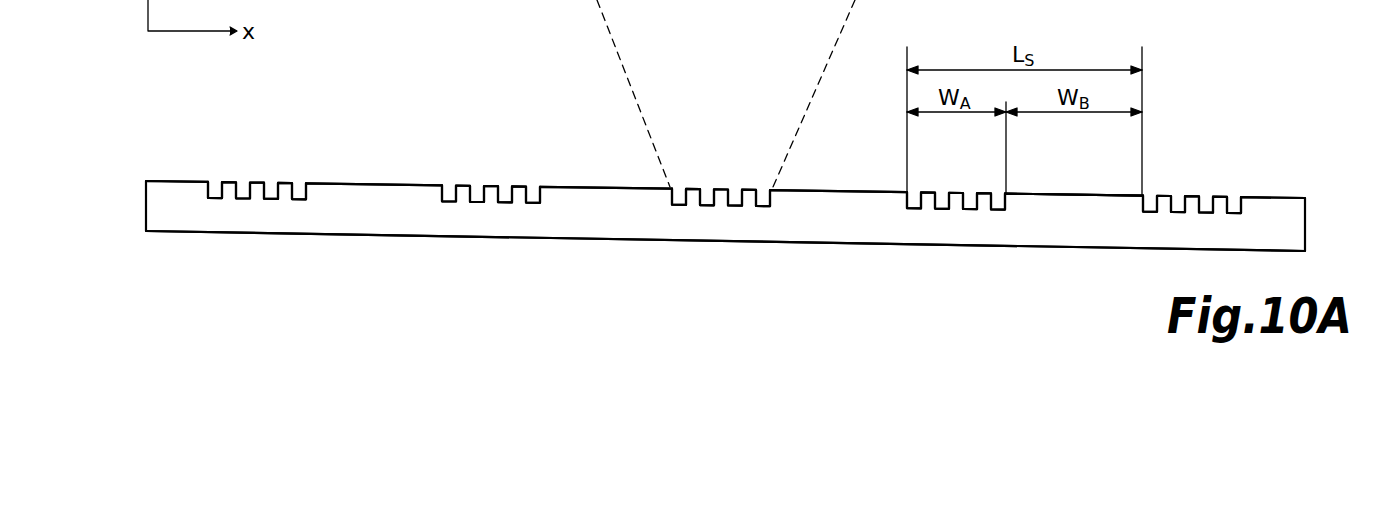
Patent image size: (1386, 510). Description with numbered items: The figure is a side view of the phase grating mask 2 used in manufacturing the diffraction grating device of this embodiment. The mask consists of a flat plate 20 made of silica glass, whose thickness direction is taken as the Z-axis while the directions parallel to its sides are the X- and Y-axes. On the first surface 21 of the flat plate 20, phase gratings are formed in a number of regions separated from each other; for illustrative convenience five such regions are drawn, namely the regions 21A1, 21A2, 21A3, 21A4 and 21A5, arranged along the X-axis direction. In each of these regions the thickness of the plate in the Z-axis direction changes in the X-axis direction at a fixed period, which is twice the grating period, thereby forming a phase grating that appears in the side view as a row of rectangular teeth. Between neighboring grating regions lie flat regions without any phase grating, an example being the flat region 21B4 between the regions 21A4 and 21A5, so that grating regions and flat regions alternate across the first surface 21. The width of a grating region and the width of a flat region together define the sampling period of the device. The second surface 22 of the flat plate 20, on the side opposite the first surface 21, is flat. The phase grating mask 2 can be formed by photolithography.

The phase grating mask 2 is at (1257, 77).
The flat plate 20 is at (162, 199).
The first surface 21 is at (172, 180).
The second surface 22 is at (187, 232).
The region having phase grating 21A1 is at (306, 164).
The region having phase grating 21A2 is at (540, 167).
The region having phase grating 21A3 is at (770, 170).
The region having phase grating 21A4 is at (1005, 174).
The flat region 21B4 is at (1140, 176).
The region having phase grating 21A5 is at (1241, 178).